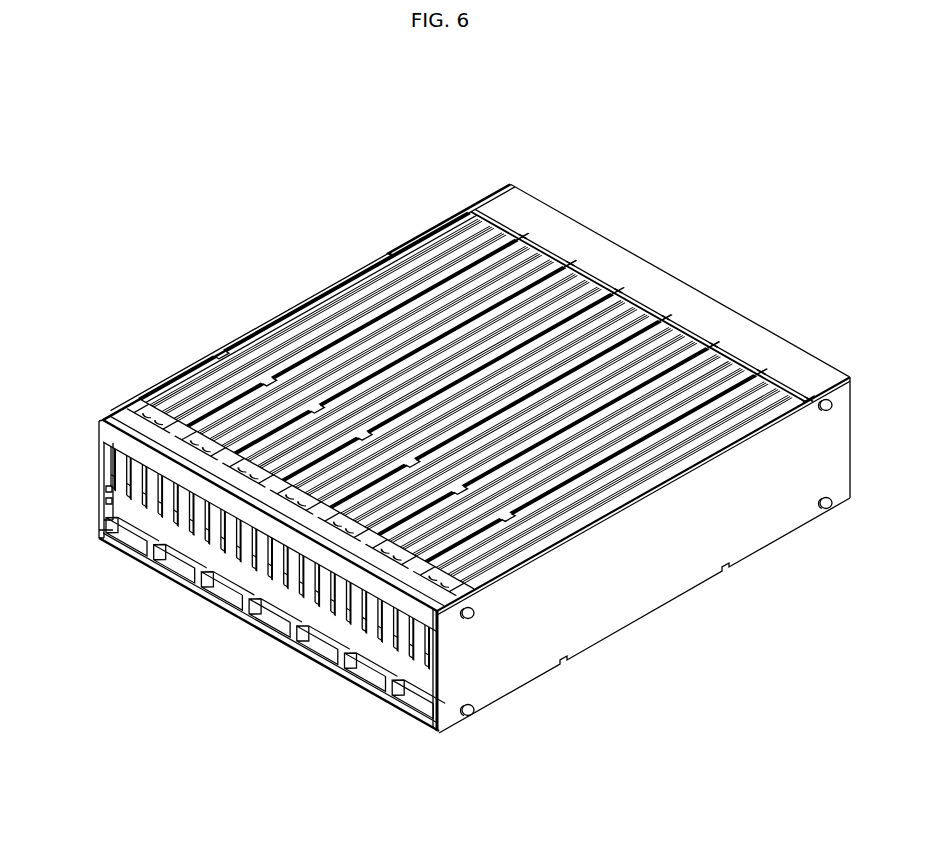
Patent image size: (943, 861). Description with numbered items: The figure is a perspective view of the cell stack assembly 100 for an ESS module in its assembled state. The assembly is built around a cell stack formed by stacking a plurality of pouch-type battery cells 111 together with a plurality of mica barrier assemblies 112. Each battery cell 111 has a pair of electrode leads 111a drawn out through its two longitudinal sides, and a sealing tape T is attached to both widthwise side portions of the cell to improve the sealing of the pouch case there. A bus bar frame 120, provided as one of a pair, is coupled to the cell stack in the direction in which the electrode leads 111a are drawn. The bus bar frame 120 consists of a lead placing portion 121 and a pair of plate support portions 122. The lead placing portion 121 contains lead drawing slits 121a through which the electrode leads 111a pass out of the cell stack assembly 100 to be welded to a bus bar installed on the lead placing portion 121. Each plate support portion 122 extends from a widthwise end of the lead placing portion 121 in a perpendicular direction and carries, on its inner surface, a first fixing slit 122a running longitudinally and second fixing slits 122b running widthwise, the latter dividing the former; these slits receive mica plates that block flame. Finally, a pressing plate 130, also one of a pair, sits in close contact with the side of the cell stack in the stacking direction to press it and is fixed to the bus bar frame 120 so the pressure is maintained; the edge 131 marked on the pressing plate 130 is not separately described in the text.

The cell stack assembly 100 is at (561, 121).
The battery cell 111 is at (613, 292).
The electrode lead 111a is at (223, 531).
The mica barrier assembly 112 is at (753, 373).
The bus bar frame 120 is at (552, 216).
The lead placing portion 121 is at (432, 668).
The lead drawing slit 121a is at (310, 601).
The plate support portion 122 is at (97, 428).
The first fixing slit 122a is at (120, 502).
The second fixing slit 122b is at (148, 556).
The pressing plate 130 is at (418, 239).
The flange 131 is at (364, 276).
The sealing tape T is at (452, 262).